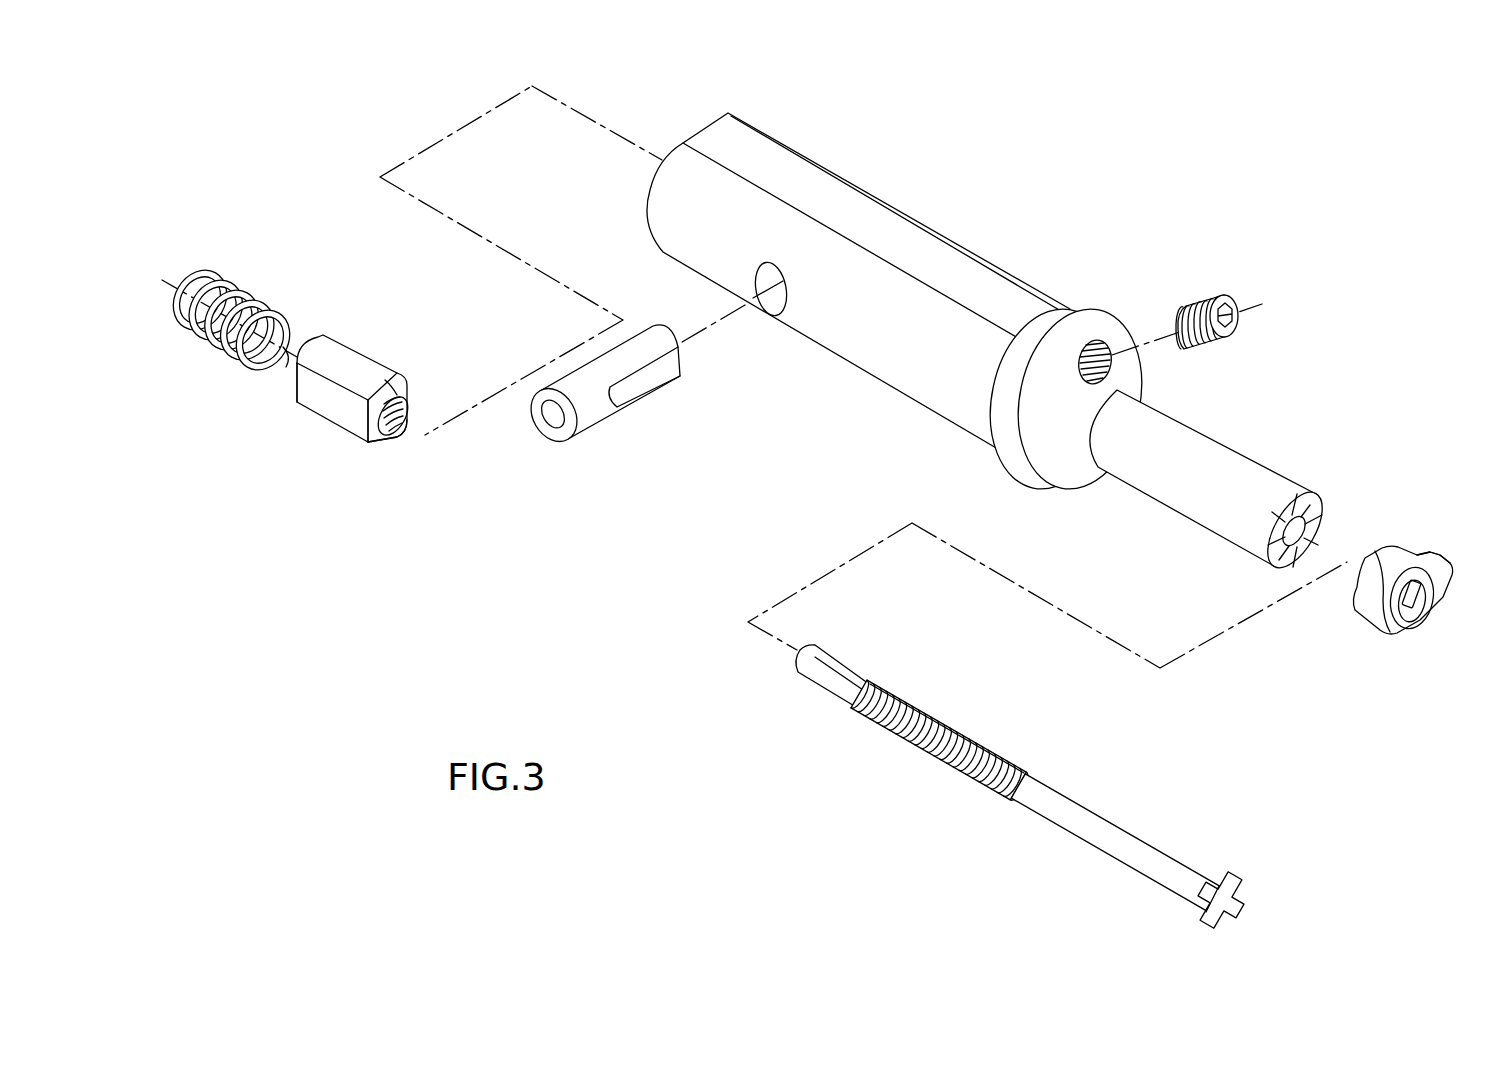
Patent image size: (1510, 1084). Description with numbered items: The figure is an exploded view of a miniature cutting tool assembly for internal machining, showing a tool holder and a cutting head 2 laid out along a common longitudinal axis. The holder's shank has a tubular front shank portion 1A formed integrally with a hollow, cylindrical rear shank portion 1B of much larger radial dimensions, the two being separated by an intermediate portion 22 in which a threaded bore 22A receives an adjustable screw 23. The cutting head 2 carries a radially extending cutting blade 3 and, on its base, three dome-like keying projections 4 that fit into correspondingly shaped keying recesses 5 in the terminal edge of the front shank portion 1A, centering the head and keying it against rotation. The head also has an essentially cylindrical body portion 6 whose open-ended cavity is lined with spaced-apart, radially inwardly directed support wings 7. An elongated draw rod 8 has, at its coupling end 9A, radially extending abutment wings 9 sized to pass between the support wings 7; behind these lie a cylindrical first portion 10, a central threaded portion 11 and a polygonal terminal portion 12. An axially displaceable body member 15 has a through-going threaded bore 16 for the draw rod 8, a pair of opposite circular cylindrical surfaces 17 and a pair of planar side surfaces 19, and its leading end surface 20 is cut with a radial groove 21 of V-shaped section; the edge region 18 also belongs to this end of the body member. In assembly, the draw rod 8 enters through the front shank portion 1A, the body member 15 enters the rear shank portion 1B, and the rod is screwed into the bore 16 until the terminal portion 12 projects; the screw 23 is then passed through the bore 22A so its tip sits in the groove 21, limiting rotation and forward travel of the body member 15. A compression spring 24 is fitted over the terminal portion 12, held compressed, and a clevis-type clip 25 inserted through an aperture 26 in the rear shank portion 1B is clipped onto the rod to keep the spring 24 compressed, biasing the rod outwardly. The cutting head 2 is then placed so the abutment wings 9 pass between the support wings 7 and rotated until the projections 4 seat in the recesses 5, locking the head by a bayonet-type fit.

The front shank portion 1A is at (1183, 432).
The rear shank portion 1B is at (847, 208).
The cutting head 2 is at (1399, 569).
The cutting blade 3 is at (1442, 558).
The keying projections 4 is at (1378, 550).
The keying recesses 5 is at (1285, 503).
The body portion 6 is at (1373, 612).
The support wings 7 is at (1422, 598).
The draw rod 8 is at (1039, 777).
The abutment wings 9 is at (1243, 886).
The coupling end 9A is at (1174, 930).
The first portion 10 is at (1082, 808).
The threaded portion 11 is at (908, 742).
The terminal portion 12 is at (830, 672).
The body member 15 is at (390, 379).
The threaded bore 16 is at (403, 412).
The circular cylindrical surfaces 17 is at (352, 358).
The end face edge 18 is at (395, 440).
The planar side surfaces 19 is at (333, 408).
The leading end surface 20 is at (380, 432).
The groove 21 is at (387, 382).
The intermediate portion 22 is at (1052, 468).
The threaded bore 22A is at (1098, 340).
The adjustable screw 23 is at (1226, 338).
The compression spring 24 is at (243, 355).
The clevis-type clip 25 is at (590, 410).
The aperture 26 is at (778, 308).